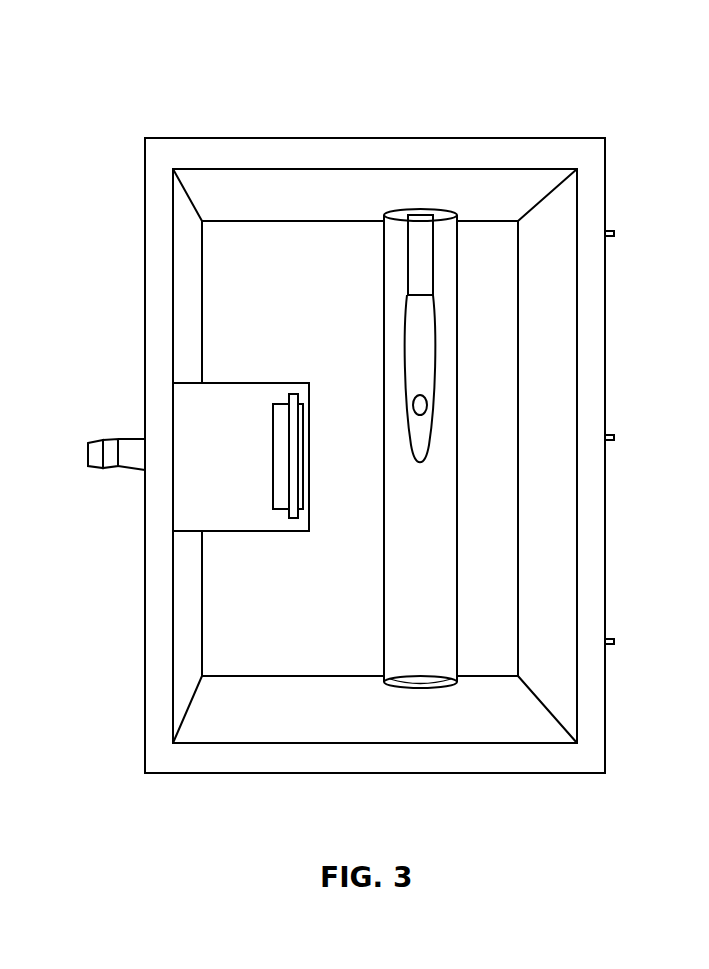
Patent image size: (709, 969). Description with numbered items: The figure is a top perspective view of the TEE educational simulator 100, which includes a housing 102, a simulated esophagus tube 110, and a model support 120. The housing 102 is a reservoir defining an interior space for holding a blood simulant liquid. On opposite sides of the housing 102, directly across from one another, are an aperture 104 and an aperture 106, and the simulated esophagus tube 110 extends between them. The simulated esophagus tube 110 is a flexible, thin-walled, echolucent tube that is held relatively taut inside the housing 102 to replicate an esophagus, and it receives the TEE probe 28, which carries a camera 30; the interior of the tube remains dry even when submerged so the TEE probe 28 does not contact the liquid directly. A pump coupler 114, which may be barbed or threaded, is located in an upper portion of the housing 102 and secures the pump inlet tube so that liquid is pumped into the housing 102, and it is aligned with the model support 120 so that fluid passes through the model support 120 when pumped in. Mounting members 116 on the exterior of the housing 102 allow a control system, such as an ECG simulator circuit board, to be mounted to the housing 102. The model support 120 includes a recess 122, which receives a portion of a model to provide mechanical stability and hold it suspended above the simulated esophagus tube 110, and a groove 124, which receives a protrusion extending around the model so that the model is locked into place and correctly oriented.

The TEE educational simulator 100 is at (160, 73).
The housing 102 is at (392, 148).
The aperture 104 is at (437, 213).
The aperture 106 is at (423, 681).
The simulated esophagus tube 110 is at (385, 651).
The pump coupler 114 is at (95, 463).
The mounting members 116 is at (614, 233).
The model support 120 is at (240, 382).
The recess 122 is at (282, 467).
The groove 124 is at (299, 443).
The TEE probe 28 is at (420, 326).
The camera 30 is at (413, 405).